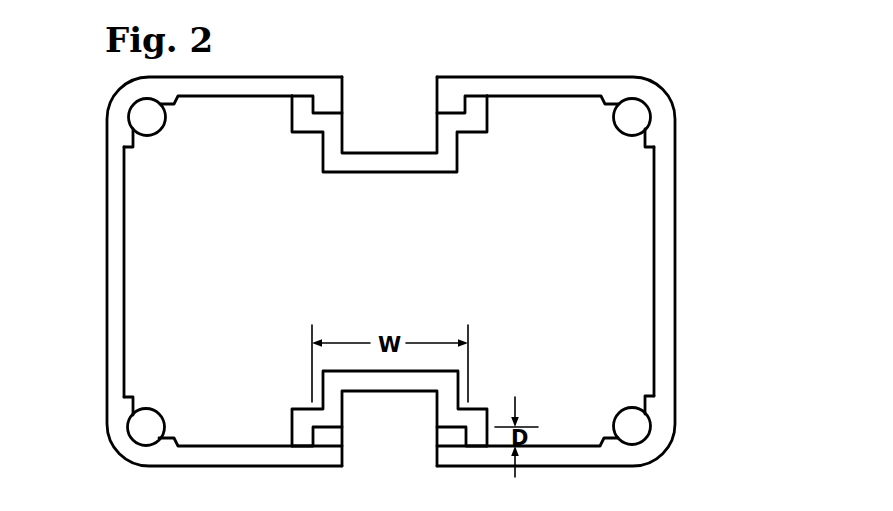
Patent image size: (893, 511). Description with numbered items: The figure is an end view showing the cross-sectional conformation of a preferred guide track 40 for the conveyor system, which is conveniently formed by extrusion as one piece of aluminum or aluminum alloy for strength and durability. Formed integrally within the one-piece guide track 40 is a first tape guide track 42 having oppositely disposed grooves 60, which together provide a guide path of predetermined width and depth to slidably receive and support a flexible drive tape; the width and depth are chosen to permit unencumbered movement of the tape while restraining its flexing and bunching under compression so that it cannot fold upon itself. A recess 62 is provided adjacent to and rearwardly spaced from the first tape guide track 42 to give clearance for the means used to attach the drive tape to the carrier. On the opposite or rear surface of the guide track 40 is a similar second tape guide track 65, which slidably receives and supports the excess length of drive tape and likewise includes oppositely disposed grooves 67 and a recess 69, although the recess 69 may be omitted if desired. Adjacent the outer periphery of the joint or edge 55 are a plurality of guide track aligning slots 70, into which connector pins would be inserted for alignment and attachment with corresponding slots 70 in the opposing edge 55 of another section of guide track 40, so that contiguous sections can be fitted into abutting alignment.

The guide track 40 is at (677, 159).
The first tape guide track 42 is at (395, 459).
The joint or edge 55 is at (106, 238).
The grooves 60 is at (328, 435).
The recess 62 is at (382, 403).
The second tape guide track 65 is at (403, 77).
The grooves 67 is at (322, 107).
The recess 69 is at (369, 140).
The guide track aligning slots 70 is at (146, 118).